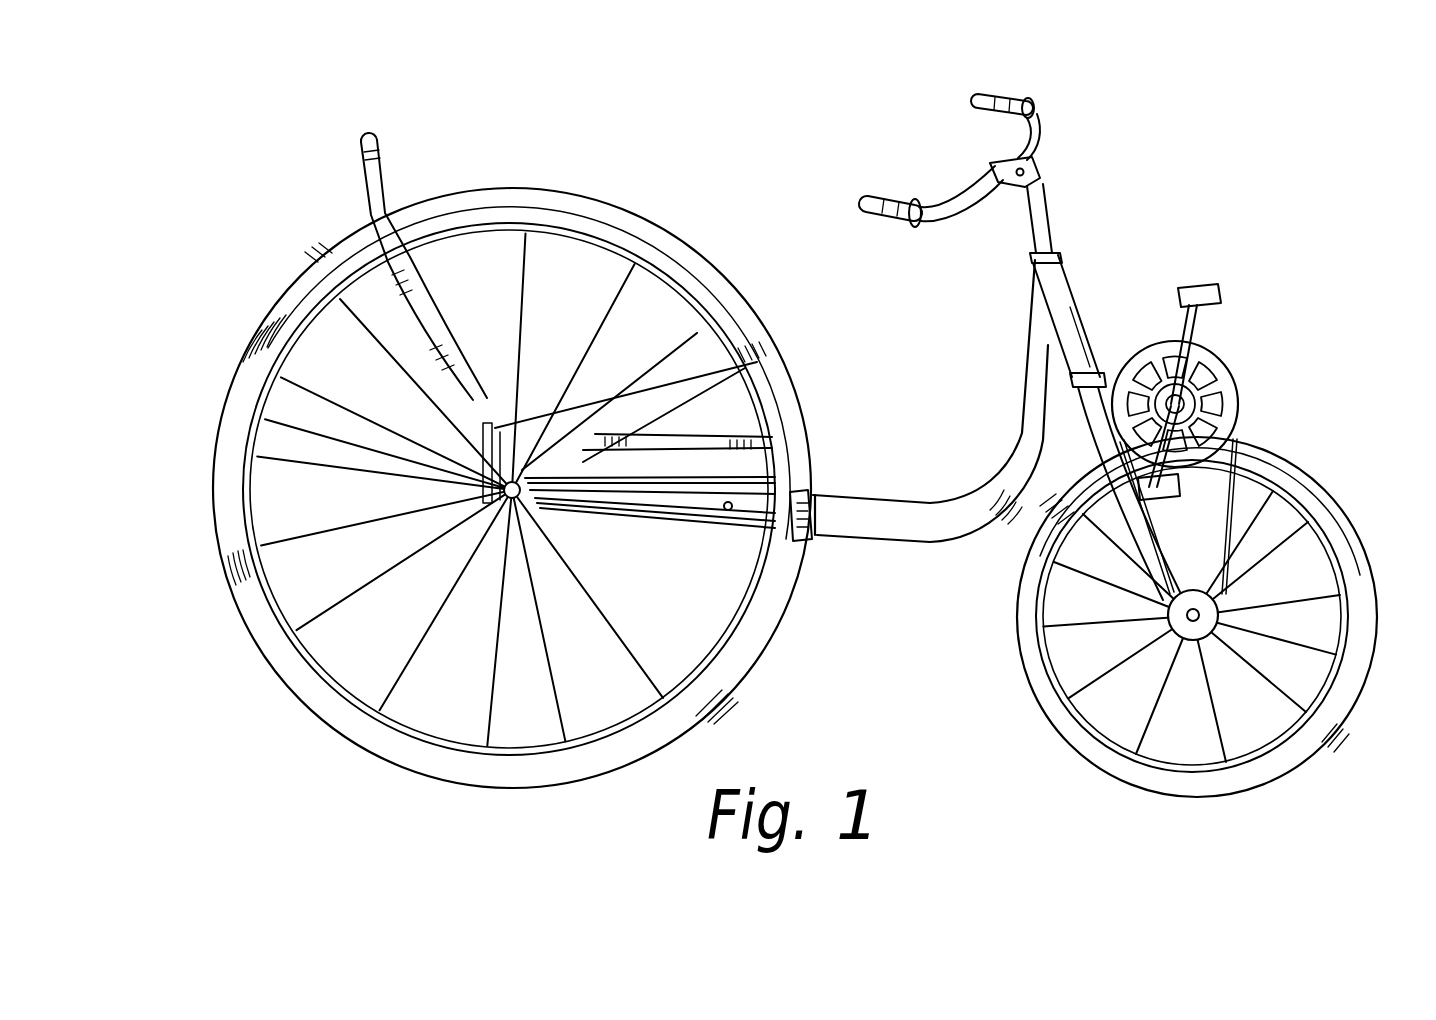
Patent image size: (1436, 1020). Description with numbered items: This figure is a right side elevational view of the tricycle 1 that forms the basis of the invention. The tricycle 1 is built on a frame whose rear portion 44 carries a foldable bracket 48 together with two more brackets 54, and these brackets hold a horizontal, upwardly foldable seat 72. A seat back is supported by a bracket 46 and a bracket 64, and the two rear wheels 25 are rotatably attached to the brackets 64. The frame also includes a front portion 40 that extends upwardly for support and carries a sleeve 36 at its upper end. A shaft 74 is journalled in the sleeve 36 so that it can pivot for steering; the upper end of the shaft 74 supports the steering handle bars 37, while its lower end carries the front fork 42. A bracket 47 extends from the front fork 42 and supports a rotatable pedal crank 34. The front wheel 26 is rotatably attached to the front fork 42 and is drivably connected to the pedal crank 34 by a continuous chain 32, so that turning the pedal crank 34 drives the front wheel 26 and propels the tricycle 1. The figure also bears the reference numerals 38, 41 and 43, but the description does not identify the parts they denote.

The tricycle 1 is at (803, 150).
The rear wheels 25 is at (222, 540).
The front wheel 26 is at (1377, 613).
The continuous chain 32 is at (1256, 532).
The pedal crank 34 is at (1237, 363).
The sleeve 36 is at (1083, 290).
The steering handle bars 37 is at (1053, 130).
The pedal 38 is at (1207, 327).
The front portion 40 is at (1020, 448).
The upper support bar 41 is at (732, 504).
The front fork 42 is at (1043, 628).
The rear bracket 43 is at (817, 543).
The rear portion 44 is at (543, 513).
The bracket 46 is at (360, 160).
The bracket 47 is at (1100, 392).
The foldable bracket 48 is at (417, 527).
The brackets 54 is at (760, 360).
The bracket 64 is at (262, 417).
The seat 72 is at (697, 333).
The shaft 74 is at (1046, 213).